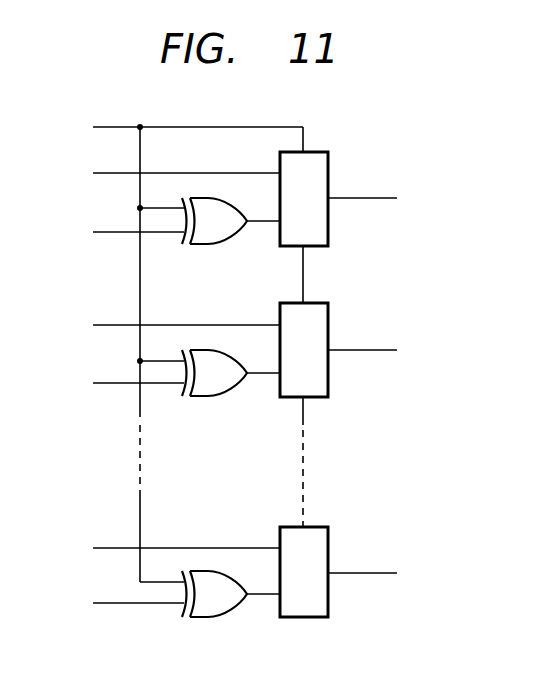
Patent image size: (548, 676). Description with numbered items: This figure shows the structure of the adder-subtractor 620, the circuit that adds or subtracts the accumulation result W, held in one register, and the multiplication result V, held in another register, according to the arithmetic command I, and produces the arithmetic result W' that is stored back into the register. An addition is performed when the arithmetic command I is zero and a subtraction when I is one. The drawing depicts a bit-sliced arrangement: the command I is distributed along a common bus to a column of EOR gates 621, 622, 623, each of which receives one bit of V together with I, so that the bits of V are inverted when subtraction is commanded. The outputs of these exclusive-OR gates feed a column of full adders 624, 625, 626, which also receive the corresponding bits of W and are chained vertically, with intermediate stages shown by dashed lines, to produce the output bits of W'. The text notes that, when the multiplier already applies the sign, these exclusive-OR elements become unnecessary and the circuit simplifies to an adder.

The adder-subtractor 620 is at (101, 72).
The EOR gate 621 is at (212, 246).
The EOR gate 622 is at (210, 398).
The EOR gate 623 is at (208, 619).
The full adder 624 is at (329, 177).
The full adder 625 is at (329, 328).
The full adder 626 is at (329, 593).